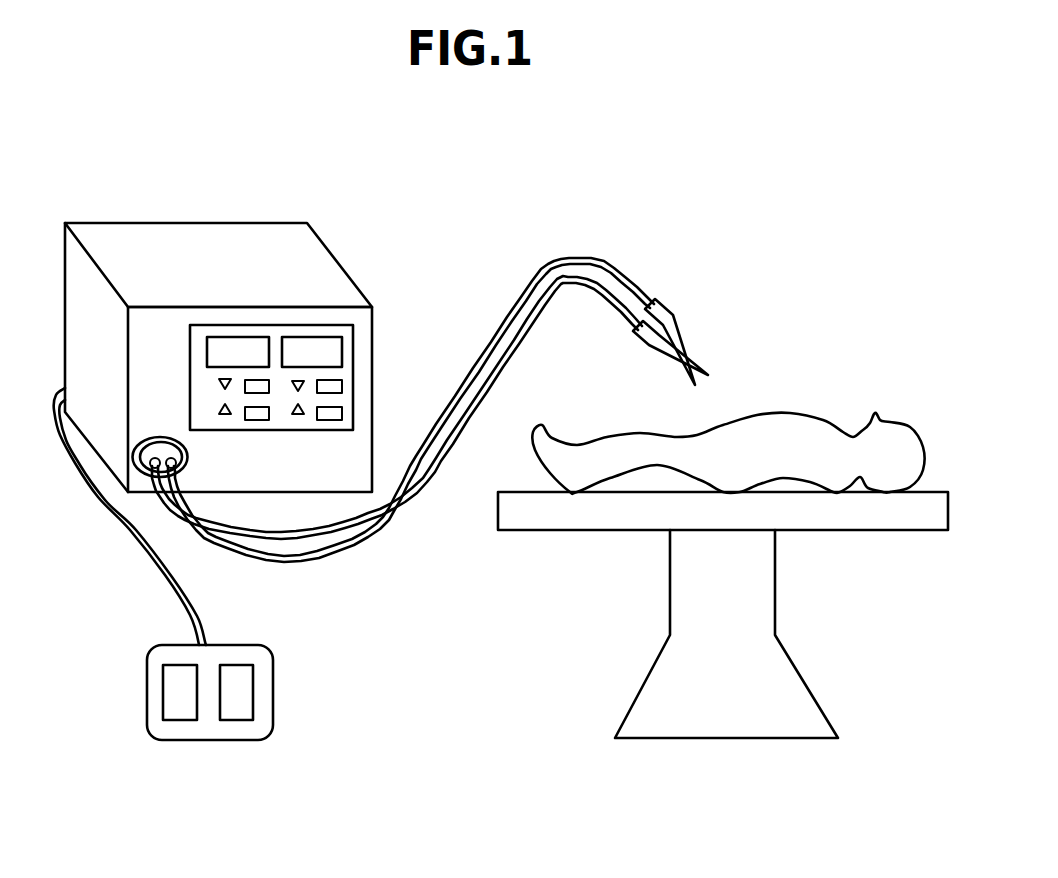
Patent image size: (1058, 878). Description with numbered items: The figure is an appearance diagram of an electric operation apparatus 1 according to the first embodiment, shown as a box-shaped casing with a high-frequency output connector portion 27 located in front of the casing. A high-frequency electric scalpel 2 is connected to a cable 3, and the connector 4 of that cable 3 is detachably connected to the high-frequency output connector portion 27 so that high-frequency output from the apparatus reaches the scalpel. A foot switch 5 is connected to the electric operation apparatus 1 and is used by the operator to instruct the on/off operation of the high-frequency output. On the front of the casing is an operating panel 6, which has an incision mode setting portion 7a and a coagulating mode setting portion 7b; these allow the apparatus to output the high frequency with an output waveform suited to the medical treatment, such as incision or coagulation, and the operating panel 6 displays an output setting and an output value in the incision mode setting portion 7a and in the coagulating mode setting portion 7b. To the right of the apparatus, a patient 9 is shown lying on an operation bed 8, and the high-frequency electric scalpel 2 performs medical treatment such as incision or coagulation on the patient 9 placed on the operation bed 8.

The electric operation apparatus 1 is at (362, 267).
The high-frequency electric scalpel 2 is at (668, 345).
The cable 3 is at (477, 368).
The connector 4 is at (186, 462).
The foot switch 5 is at (275, 688).
The operating panel 6 is at (353, 368).
The incision mode setting portion 7a is at (235, 328).
The coagulating mode setting portion 7b is at (313, 328).
The operation bed 8 is at (847, 532).
The patient 9 is at (800, 413).
The high-frequency output connector portion 27 is at (127, 462).